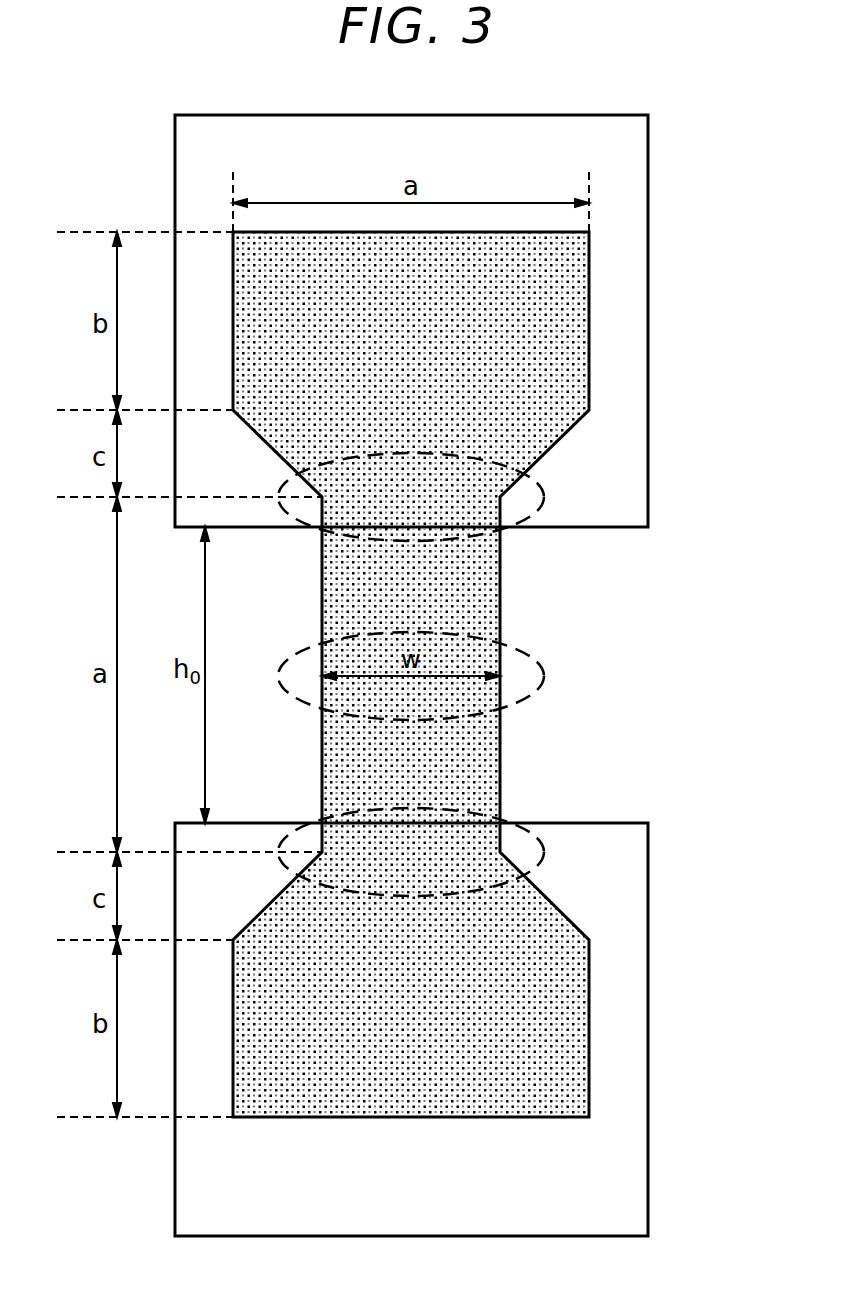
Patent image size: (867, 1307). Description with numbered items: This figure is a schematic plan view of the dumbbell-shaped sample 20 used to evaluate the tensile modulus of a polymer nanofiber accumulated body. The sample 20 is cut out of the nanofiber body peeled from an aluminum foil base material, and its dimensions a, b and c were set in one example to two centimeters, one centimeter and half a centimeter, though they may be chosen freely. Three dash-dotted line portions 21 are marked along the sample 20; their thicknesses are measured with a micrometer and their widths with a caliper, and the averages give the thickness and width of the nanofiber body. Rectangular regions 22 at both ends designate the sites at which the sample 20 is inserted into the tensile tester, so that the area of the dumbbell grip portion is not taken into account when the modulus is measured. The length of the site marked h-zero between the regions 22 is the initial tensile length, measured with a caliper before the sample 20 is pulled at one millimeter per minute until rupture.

The dumbbell-shaped sample 20 is at (547, 325).
The dash-dotted line portions 21 is at (544, 492).
The rectangular regions 22 is at (648, 415).